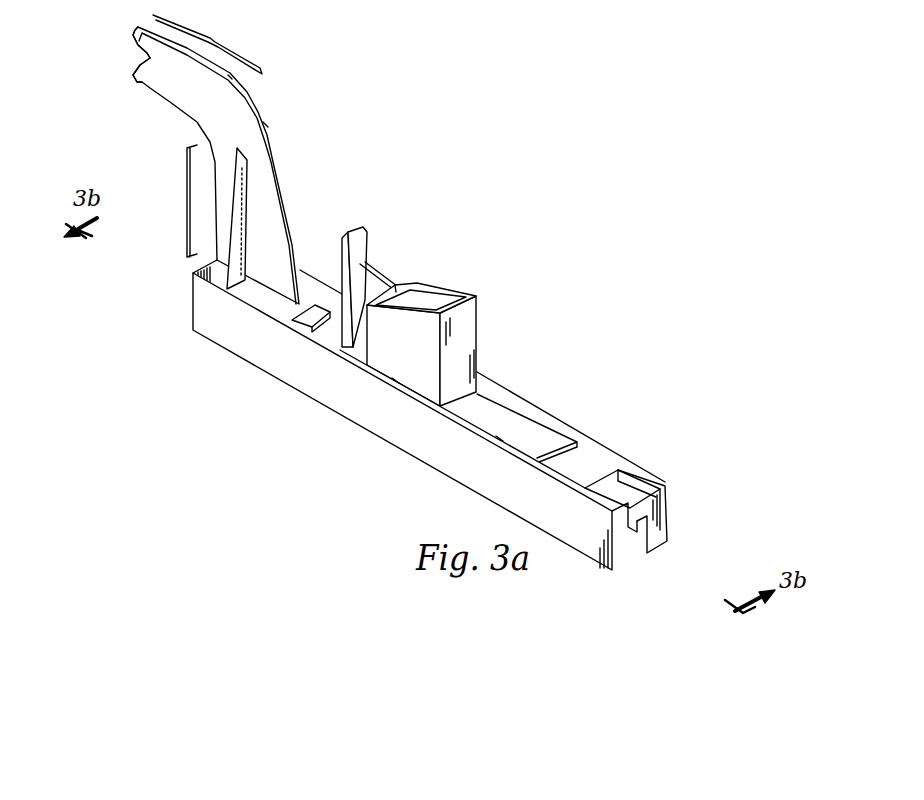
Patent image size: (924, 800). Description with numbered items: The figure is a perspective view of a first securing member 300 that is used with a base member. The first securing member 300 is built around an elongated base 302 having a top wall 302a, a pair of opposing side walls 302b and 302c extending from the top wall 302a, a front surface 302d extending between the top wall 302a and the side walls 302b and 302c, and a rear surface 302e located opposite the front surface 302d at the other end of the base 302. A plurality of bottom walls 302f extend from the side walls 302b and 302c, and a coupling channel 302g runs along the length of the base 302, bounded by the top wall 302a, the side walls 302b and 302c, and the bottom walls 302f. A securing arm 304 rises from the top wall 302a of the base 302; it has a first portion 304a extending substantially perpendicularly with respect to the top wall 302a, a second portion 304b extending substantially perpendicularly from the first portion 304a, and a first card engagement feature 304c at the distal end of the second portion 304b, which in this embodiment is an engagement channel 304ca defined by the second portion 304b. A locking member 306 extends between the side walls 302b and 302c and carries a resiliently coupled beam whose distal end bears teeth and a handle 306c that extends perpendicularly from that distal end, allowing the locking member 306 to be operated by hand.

The first securing member 300 is at (556, 262).
The base 302 is at (330, 416).
The top wall 302a is at (600, 455).
The side wall 302b is at (447, 467).
The side wall 302c is at (510, 390).
The front surface 302d is at (190, 301).
The rear surface 302e is at (668, 497).
The bottom walls 302f is at (656, 538).
The coupling channel 302g is at (632, 494).
The securing arm 304 is at (284, 161).
The first portion 304a is at (190, 188).
The second portion 304b is at (215, 41).
The first card engagement feature 304c is at (127, 51).
The engagement channel 304ca is at (135, 70).
The locking member 306 is at (434, 283).
The handle 306c is at (362, 232).